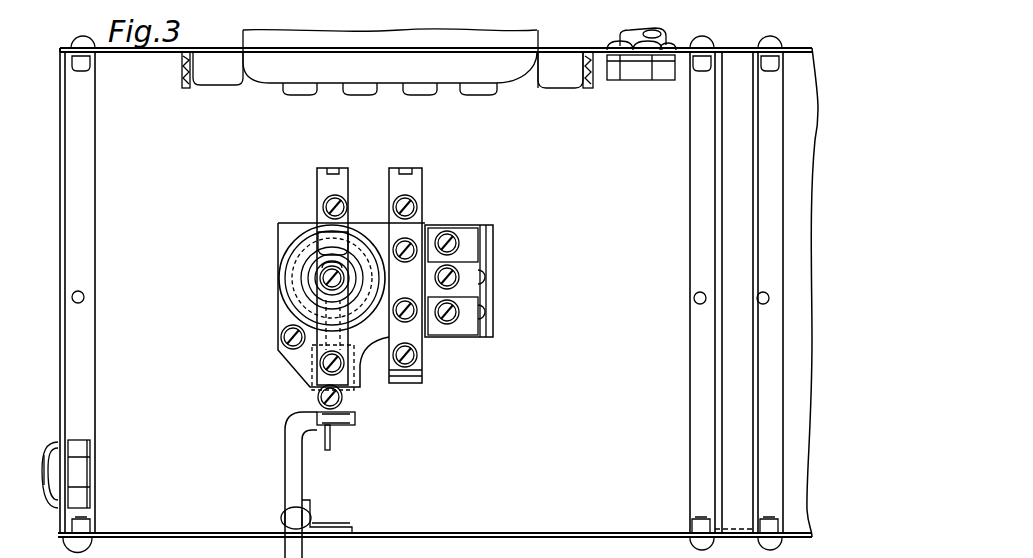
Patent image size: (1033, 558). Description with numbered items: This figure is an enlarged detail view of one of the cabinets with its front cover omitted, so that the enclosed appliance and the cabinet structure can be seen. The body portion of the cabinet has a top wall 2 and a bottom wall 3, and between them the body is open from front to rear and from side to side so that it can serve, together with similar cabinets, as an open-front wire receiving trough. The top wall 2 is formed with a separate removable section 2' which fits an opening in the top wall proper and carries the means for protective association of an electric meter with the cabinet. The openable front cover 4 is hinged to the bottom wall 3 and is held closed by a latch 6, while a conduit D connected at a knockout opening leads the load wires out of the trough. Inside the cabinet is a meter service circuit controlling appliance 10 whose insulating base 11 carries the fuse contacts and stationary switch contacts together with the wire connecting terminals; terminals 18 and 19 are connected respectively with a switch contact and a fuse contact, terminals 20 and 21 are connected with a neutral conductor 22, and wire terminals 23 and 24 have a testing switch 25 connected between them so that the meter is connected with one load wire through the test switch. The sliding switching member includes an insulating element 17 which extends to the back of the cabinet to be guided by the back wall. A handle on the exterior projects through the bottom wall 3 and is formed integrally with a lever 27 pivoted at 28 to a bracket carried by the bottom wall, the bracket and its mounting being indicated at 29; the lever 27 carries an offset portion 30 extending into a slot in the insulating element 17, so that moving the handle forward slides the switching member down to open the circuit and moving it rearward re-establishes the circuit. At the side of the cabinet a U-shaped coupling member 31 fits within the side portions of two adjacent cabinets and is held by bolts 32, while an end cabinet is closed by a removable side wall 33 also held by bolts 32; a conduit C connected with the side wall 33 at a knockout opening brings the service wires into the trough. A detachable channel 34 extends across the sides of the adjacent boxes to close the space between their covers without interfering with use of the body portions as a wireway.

The top wall 2 is at (436, 62).
The separate removable section 2' is at (387, 70).
The bottom wall 3 is at (603, 532).
The openable front cover 4 is at (337, 165).
The latch 6 is at (654, 62).
The meter service circuit controlling appliance 10 is at (280, 255).
The insulating base 11 is at (278, 232).
The insulating element 17 is at (327, 450).
The wire connecting terminal 18 is at (318, 400).
The wire connecting terminal 19 is at (320, 207).
The wire connecting terminal 20 is at (415, 362).
The wire connecting terminal 21 is at (414, 207).
The neutral conductor 22 is at (389, 232).
The wire terminal 23 is at (449, 232).
The wire terminal 24 is at (452, 322).
The testing switch 25 is at (490, 294).
The lever 27 is at (288, 453).
The pivot 28 is at (288, 512).
The fitting 29 is at (346, 531).
The offset portion 30 is at (356, 420).
The coupling member 31 is at (689, 372).
The bolts 32 is at (716, 545).
The removable side wall 33 is at (66, 178).
The detachable channel 34 is at (725, 418).
The conduit C is at (47, 441).
The conduit D is at (665, 41).